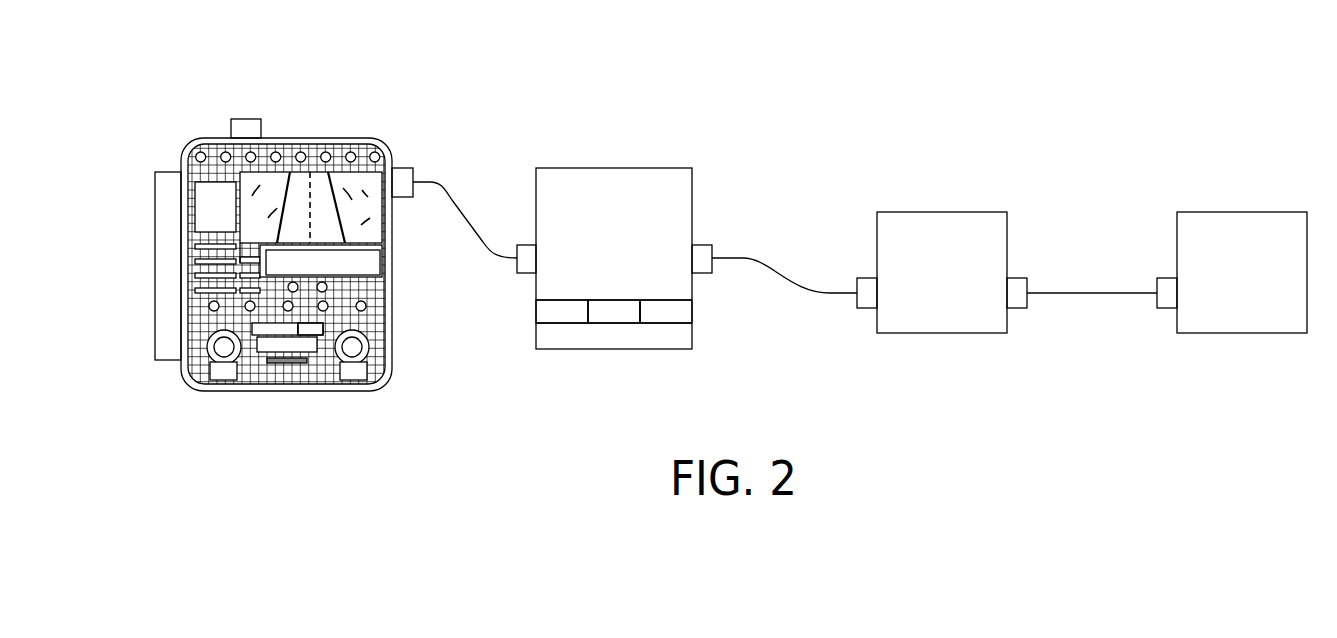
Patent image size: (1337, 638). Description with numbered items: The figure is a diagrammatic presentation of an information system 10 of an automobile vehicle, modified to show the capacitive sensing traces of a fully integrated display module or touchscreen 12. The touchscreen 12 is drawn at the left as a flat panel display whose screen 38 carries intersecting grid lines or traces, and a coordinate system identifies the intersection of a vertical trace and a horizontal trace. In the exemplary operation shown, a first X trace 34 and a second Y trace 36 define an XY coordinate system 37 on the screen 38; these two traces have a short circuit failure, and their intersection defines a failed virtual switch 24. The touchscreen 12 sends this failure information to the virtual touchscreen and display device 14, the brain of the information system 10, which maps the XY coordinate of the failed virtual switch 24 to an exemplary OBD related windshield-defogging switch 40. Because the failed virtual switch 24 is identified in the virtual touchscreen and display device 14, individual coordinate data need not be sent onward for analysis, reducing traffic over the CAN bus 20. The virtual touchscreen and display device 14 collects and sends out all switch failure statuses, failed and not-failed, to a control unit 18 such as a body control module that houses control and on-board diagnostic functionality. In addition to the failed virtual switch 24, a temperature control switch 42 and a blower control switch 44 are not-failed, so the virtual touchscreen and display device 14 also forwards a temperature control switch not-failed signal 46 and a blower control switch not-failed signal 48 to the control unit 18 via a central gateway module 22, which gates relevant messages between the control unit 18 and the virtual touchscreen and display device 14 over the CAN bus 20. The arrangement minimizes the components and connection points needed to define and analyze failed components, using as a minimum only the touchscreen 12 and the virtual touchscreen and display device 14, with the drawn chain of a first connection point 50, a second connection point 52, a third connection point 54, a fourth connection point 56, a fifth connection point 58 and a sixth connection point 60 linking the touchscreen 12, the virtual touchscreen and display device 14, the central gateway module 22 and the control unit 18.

The information system 10 is at (935, 88).
The touchscreen 12 is at (285, 138).
The virtual touchscreen and display device 14 is at (615, 168).
The control unit 18 is at (1242, 212).
The CAN bus 20 is at (787, 273).
The central gateway module 22 is at (941, 212).
The failed virtual switch 24 is at (263, 330).
The first X trace 34 is at (190, 335).
The second Y trace 36 is at (266, 380).
The XY coordinate system 37 is at (186, 382).
The screen 38 is at (345, 226).
The windshield-defogging switch 40 is at (283, 329).
The temperature control switch 42 is at (307, 330).
The blower control switch 44 is at (324, 331).
The temperature control switch not-failed signal 46 is at (616, 312).
The blower control switch not-failed signal 48 is at (663, 312).
The first connection point 50 is at (402, 178).
The second connection point 52 is at (522, 248).
The third connection point 54 is at (700, 265).
The fourth connection point 56 is at (865, 293).
The fifth connection point 58 is at (1018, 288).
The sixth connection point 60 is at (1167, 288).